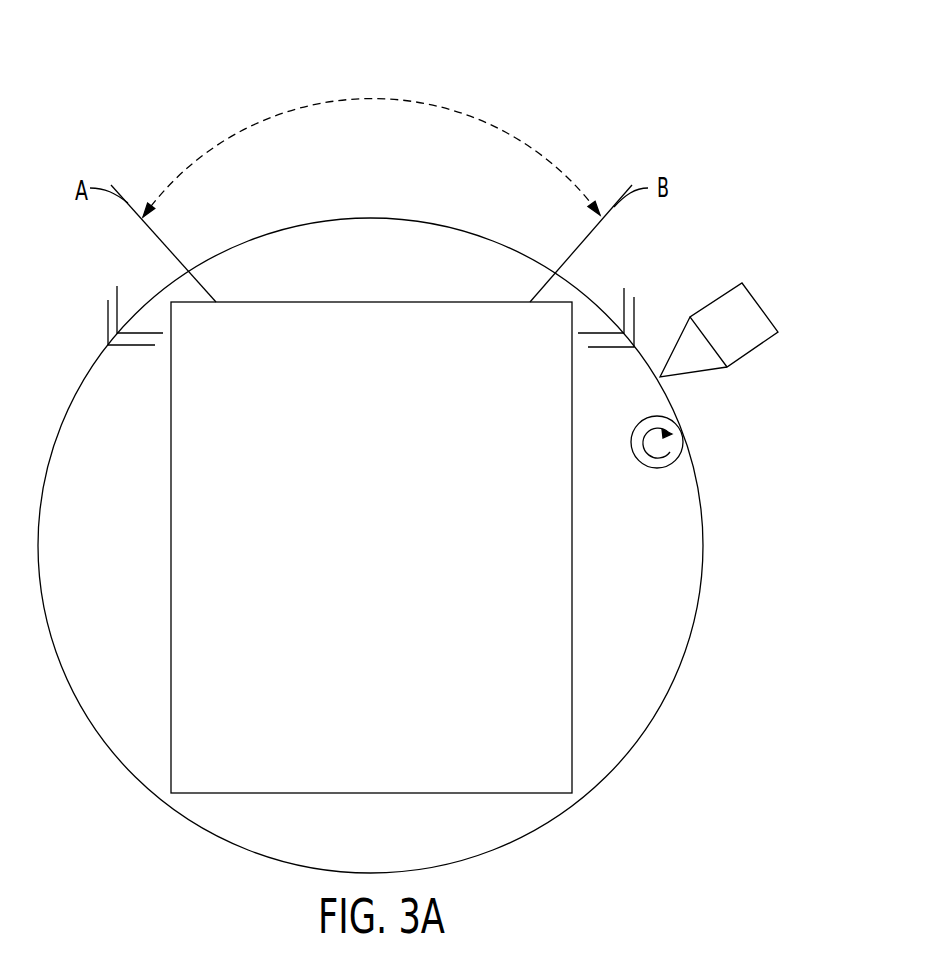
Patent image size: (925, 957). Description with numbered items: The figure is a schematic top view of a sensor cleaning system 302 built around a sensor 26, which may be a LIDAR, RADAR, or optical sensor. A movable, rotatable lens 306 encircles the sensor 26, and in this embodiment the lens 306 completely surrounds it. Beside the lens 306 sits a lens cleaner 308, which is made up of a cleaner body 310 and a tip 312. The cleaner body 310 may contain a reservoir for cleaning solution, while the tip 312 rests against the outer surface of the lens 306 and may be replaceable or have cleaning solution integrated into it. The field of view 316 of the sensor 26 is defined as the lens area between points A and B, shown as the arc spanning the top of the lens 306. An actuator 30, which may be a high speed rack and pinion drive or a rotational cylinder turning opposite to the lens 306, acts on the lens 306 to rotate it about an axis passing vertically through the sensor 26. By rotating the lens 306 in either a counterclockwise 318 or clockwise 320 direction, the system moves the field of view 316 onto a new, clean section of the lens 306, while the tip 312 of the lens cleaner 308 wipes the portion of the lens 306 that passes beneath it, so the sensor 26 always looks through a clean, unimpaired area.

The sensor cleaning system 302 is at (97, 80).
The lens 306 is at (402, 217).
The sensor 26 is at (572, 605).
The field of view 316 is at (456, 116).
The counterclockwise direction 318 is at (117, 292).
The clockwise direction 320 is at (624, 292).
The lens cleaner 308 is at (748, 326).
The cleaner body 310 is at (755, 350).
The tip 312 is at (693, 378).
The actuator 30 is at (680, 456).